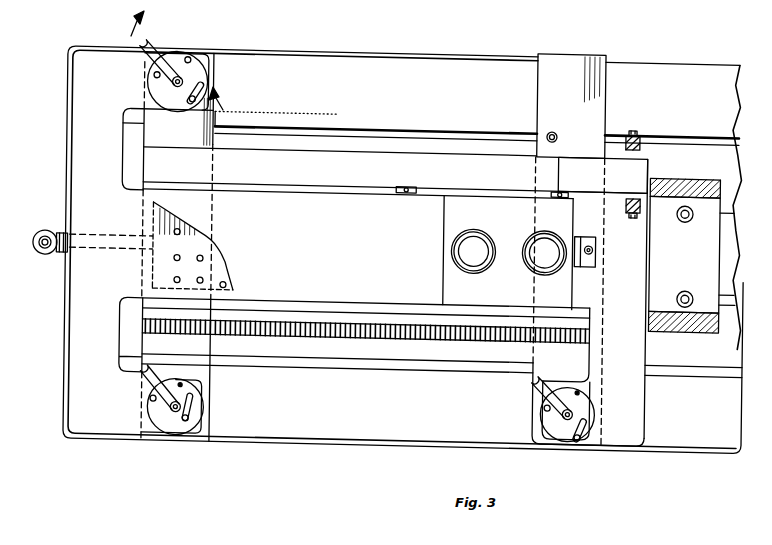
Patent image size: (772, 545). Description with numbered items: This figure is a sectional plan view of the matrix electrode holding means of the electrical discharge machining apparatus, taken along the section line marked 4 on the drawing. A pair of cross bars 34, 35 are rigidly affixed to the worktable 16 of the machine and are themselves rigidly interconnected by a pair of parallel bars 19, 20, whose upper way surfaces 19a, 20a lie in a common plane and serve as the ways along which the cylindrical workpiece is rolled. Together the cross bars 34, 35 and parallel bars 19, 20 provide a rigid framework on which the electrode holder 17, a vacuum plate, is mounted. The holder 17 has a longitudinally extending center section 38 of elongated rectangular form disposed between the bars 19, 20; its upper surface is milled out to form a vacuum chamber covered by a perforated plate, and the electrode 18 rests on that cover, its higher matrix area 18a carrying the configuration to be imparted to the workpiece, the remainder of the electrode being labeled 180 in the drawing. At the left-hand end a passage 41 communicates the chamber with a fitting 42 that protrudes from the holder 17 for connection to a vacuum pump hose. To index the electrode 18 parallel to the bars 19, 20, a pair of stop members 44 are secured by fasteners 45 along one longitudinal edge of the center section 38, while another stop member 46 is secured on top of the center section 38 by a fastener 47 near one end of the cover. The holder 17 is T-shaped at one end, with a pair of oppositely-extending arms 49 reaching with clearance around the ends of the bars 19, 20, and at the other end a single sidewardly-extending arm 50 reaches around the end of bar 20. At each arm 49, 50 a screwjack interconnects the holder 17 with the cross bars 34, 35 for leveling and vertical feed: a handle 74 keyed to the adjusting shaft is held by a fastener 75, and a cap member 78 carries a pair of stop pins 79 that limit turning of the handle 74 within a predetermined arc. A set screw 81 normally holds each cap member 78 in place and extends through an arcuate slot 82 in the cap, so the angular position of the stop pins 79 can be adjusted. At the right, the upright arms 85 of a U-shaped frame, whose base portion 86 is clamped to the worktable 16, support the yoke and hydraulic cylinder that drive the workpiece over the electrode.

The section line of FIG. 4 is at (183, 59).
The worktable 16 is at (646, 68).
The electrode holder 17 is at (74, 143).
The electrode 18 is at (244, 202).
The matrix area 18a is at (478, 203).
The parallel bar 19 is at (328, 140).
The way surface 19a is at (467, 162).
The parallel bar 20 is at (304, 307).
The way surface 20a is at (453, 322).
The cross bar 34 is at (213, 350).
The cross bar 35 is at (536, 78).
The center section 38 is at (333, 192).
The passage 41 is at (115, 232).
The fitting 42 is at (43, 256).
The stop member 44 is at (568, 192).
The fastener 45 is at (566, 176).
The stop member 46 is at (597, 238).
The fastener 47 is at (593, 250).
The arm 49 is at (83, 50).
The arm 50 is at (643, 441).
The handle 74 is at (158, 46).
The fastener 75 is at (206, 76).
The cap member 78 is at (152, 88).
The stop 79 is at (192, 58).
The set screw 81 is at (192, 104).
The arcuate slot 82 is at (201, 84).
The upright arm 85 is at (676, 180).
The base portion 86 is at (716, 246).
The carriage plate region 180 is at (363, 250).